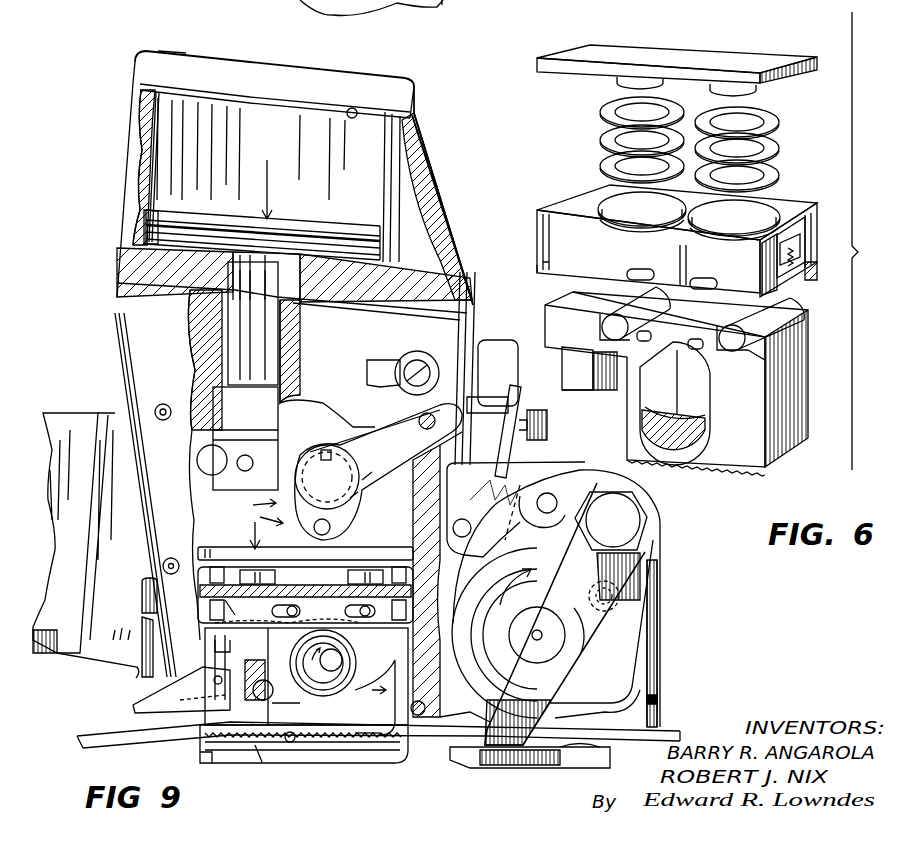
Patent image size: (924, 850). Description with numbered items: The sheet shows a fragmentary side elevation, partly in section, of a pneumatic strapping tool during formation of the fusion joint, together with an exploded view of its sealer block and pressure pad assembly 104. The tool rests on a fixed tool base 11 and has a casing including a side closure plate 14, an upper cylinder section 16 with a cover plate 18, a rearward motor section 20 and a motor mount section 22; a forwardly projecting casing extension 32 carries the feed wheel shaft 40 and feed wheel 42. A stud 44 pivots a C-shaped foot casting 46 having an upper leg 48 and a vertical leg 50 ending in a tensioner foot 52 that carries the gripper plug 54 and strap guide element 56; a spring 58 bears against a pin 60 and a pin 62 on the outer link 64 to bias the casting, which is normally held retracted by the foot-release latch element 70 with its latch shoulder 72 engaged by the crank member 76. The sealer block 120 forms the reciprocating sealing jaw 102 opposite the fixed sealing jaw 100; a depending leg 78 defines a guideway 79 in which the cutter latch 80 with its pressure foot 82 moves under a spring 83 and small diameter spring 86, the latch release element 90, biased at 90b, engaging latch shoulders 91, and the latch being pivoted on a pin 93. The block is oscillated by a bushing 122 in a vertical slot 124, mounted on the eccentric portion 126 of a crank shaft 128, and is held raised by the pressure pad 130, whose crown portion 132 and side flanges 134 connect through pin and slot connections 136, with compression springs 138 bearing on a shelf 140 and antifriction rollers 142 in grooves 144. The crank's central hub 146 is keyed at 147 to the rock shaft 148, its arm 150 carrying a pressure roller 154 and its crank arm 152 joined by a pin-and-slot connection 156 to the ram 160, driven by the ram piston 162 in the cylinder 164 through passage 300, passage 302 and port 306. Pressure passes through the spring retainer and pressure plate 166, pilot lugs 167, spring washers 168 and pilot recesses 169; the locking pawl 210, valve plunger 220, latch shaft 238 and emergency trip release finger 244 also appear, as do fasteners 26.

In FIG. 9, the tool base 11 is at (202, 755).
In FIG. 9, the side closure plate 14 is at (140, 478).
In FIG. 9, the upper cylinder section 16 is at (430, 186).
In FIG. 9, the cover plate 18 is at (295, 76).
In FIG. 9, the motor section 20 is at (50, 412).
In FIG. 9, the motor mount section 22 is at (88, 650).
In FIG. 9, the fastening screw 26 is at (170, 54).
In FIG. 9, the casing extension 32 is at (661, 616).
In FIG. 9, the feed wheel shaft 40 is at (538, 628).
In FIG. 9, the feed wheel 42 is at (470, 612).
In FIG. 9, the stud 44 is at (632, 512).
In FIG. 9, the foot casting 46 is at (661, 695).
In FIG. 9, the upper leg 48 is at (550, 480).
In FIG. 9, the vertical leg 50 is at (641, 670).
In FIG. 9, the tensioner foot 52 is at (470, 750).
In FIG. 9, the gripper plug 54 is at (508, 758).
In FIG. 9, the strap guide element 56 is at (560, 760).
In FIG. 9, the spring 58 is at (556, 528).
In FIG. 9, the pin 60 is at (545, 492).
In FIG. 9, the pin 62 is at (640, 592).
In FIG. 9, the outer link 64 is at (641, 640).
In FIG. 9, the foot-release latch element 70 is at (516, 395).
In FIG. 9, the latch shoulder 72 is at (440, 470).
In FIG. 9, the crank member 76 is at (258, 506).
In FIG. 6, the depending leg 78 is at (570, 380).
In FIG. 6, the guideway 79 is at (624, 400).
In FIG. 9, the cutter latch 80 is at (261, 769).
In FIG. 9, the pressure foot 82 is at (245, 762).
In FIG. 9, the spring 83 is at (153, 633).
In FIG. 9, the small diameter spring 86 is at (262, 604).
In FIG. 9, the latch release element 90 is at (132, 708).
In FIG. 9, the spring bias 90b is at (378, 729).
In FIG. 9, the latch shoulders 91 is at (257, 695).
In FIG. 9, the pin 93 is at (201, 687).
In FIG. 9, the fixed sealing jaw 100 is at (358, 738).
In FIG. 9, the reciprocating sealing jaw 102 is at (305, 735).
In FIG. 6, the reciprocating sealing jaw 102 is at (705, 485).
In FIG. 6, the sealer block and pressure pad assembly 104 is at (873, 241).
In FIG. 9, the sealer block 120 is at (306, 676).
In FIG. 6, the sealer block 120 is at (748, 439).
In FIG. 9, the bushing 122 is at (290, 745).
In FIG. 6, the vertical slot 124 is at (700, 392).
In FIG. 9, the eccentric portion 126 is at (347, 672).
In FIG. 9, the crank shaft 128 is at (342, 657).
In FIG. 9, the pressure pad 130 is at (222, 545).
In FIG. 6, the pressure pad 130 is at (607, 260).
In FIG. 6, the crown portion 132 is at (560, 208).
In FIG. 6, the side flanges 134 is at (537, 262).
In FIG. 6, the pin and slot connections 136 is at (690, 335).
In FIG. 9, the compression springs 138 is at (150, 578).
In FIG. 6, the compression springs 138 is at (782, 240).
In FIG. 6, the shelf 140 is at (790, 230).
In FIG. 6, the antifriction rollers 142 is at (606, 322).
In FIG. 6, the grooves 144 is at (765, 365).
In FIG. 9, the central hub 146 is at (298, 400).
In FIG. 9, the key 147 is at (350, 425).
In FIG. 9, the rock shaft 148 is at (360, 490).
In FIG. 9, the arm 150 is at (355, 505).
In FIG. 9, the crank arm 152 is at (312, 452).
In FIG. 9, the pressure roller 154 is at (331, 530).
In FIG. 9, the pin-and-slot connection 156 is at (205, 455).
In FIG. 9, the ram 160 is at (248, 328).
In FIG. 9, the ram piston 162 is at (292, 222).
In FIG. 9, the cylinder 164 is at (152, 160).
In FIG. 9, the spring retainer and pressure plate 166 is at (370, 562).
In FIG. 6, the spring retainer and pressure plate 166 is at (693, 54).
In FIG. 6, the pilot lugs 167 is at (760, 92).
In FIG. 6, the spring washers 168 is at (598, 115).
In FIG. 6, the pilot recesses 169 is at (606, 198).
In FIG. 9, the locking pawl 210 is at (385, 465).
In FIG. 9, the valve plunger 220 is at (485, 410).
In FIG. 9, the latch shaft 238 is at (420, 352).
In FIG. 9, the emergency trip release finger 244 is at (375, 360).
In FIG. 9, the passage 300 is at (375, 305).
In FIG. 9, the passage 302 is at (380, 292).
In FIG. 9, the port 306 is at (360, 110).